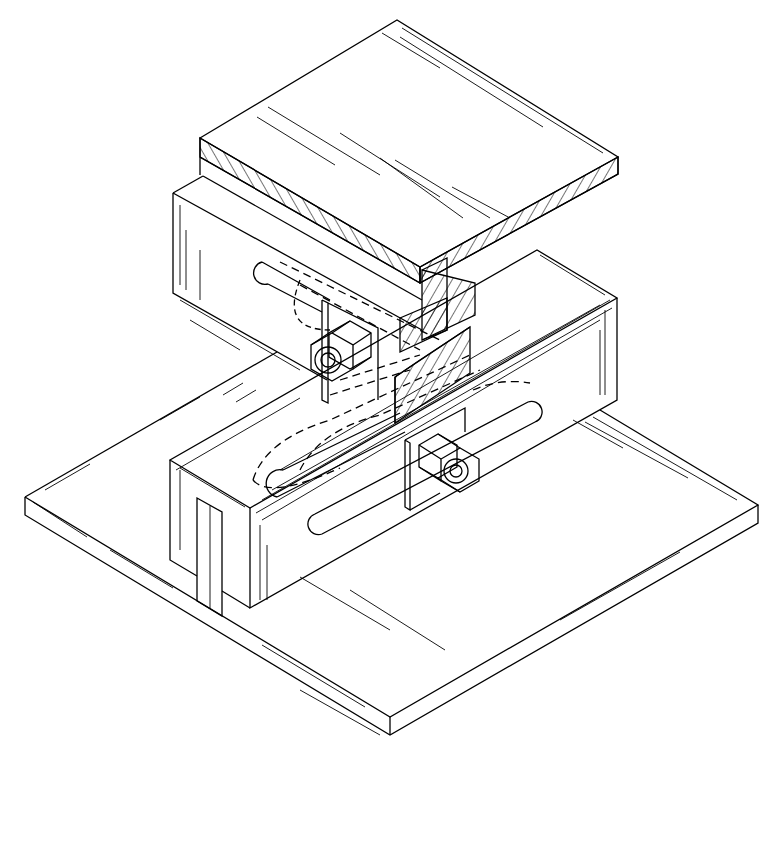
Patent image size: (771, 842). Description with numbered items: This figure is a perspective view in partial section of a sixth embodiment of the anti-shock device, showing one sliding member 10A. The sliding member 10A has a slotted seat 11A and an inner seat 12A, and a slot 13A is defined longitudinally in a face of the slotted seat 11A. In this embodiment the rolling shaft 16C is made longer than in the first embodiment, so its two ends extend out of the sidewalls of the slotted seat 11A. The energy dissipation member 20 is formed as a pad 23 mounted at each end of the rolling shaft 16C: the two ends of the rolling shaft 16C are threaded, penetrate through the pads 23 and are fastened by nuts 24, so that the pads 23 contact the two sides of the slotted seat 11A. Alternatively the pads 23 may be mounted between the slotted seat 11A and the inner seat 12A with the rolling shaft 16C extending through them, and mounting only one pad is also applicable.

The sliding member 10A is at (163, 222).
The slotted seat 11A is at (588, 360).
The inner seat 12A is at (212, 583).
The slot 13A is at (198, 540).
The rolling shaft 16C is at (463, 472).
The energy dissipation member 20 is at (450, 512).
The pad 23 is at (418, 498).
The nut 24 is at (470, 455).